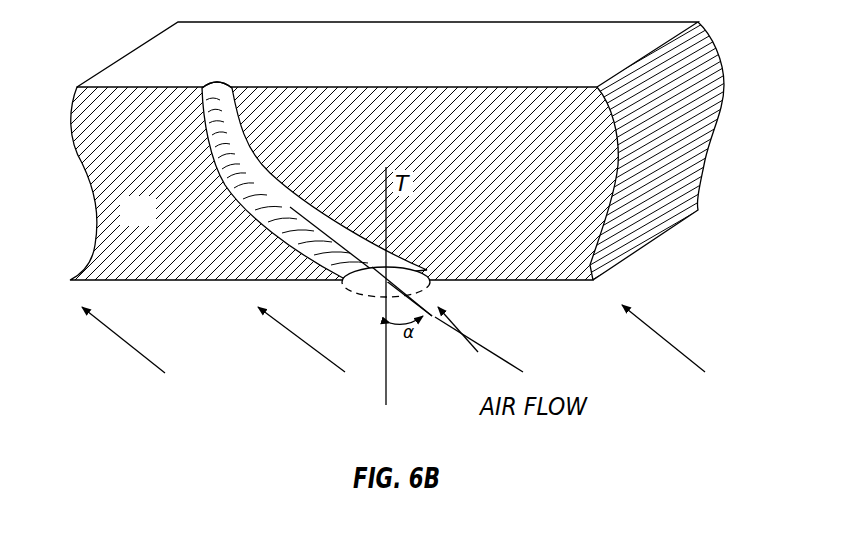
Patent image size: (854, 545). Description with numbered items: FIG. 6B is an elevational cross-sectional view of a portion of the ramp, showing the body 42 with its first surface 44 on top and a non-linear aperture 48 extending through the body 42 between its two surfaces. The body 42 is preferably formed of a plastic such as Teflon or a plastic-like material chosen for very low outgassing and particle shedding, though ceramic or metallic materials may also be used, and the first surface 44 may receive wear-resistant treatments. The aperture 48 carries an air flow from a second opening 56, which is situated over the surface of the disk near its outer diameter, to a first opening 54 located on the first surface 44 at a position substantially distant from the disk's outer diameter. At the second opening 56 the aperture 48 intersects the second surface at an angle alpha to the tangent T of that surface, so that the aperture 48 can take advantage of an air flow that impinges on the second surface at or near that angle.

The body 42 is at (151, 223).
The first surface 44 is at (464, 66).
The aperture 48 is at (260, 196).
The first opening 54 is at (218, 77).
The second opening 56 is at (373, 302).